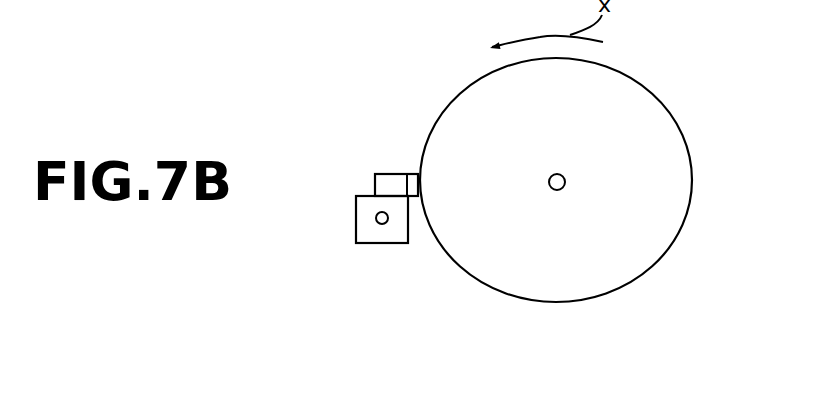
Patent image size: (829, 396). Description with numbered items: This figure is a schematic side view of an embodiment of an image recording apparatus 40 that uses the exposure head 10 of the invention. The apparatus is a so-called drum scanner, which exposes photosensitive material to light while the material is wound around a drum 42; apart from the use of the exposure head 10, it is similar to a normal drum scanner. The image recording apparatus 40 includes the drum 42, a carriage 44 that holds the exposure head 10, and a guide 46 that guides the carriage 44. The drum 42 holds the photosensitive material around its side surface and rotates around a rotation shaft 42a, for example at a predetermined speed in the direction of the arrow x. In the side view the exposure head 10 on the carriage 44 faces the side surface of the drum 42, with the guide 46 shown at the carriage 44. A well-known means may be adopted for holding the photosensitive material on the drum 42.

The exposure head 10 is at (389, 175).
The image recording apparatus 40 is at (528, 226).
The drum 42 is at (597, 180).
The rotation shaft 42a is at (566, 183).
The carriage 44 is at (348, 251).
The guide 46 is at (384, 226).